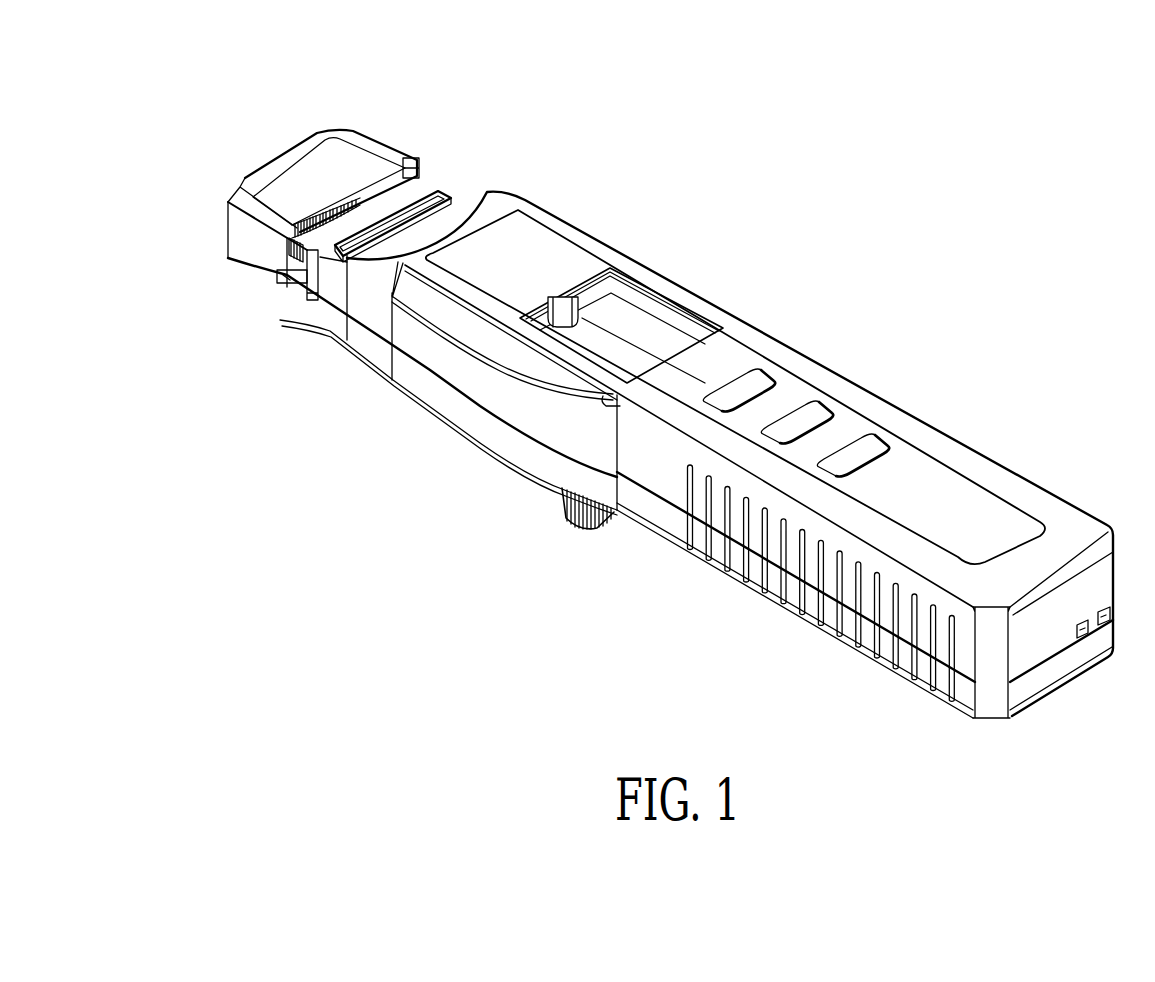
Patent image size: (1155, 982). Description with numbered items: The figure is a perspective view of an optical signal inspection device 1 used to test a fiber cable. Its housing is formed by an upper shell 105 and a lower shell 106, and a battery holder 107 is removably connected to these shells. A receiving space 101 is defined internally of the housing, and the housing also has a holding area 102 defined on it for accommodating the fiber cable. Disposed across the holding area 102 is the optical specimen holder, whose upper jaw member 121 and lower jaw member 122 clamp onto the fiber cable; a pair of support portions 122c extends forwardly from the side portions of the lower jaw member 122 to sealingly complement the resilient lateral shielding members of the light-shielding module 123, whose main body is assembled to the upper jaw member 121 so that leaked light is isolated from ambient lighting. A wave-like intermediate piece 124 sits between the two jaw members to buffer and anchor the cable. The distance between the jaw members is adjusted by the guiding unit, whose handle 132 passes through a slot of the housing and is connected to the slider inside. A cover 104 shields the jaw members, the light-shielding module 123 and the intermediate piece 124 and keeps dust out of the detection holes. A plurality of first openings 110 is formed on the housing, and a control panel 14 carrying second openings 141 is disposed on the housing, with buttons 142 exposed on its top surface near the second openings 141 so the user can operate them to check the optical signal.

The optical signal inspection device 1 is at (918, 93).
The receiving space 101 is at (623, 320).
The holding area 102 is at (437, 170).
The cover 104 is at (292, 160).
The upper shell 105 is at (928, 445).
The lower shell 106 is at (523, 457).
The battery holder 107 is at (897, 655).
The first openings 110 is at (668, 305).
The upper jaw member 121 is at (287, 242).
The lower jaw member 122 is at (313, 273).
The support portions 122c is at (285, 287).
The light-shielding module 123 is at (407, 170).
The intermediate piece 124 is at (370, 193).
The handle 132 is at (597, 527).
The control panel 14 is at (762, 358).
The second openings 141 is at (712, 313).
The buttons 142 is at (812, 420).